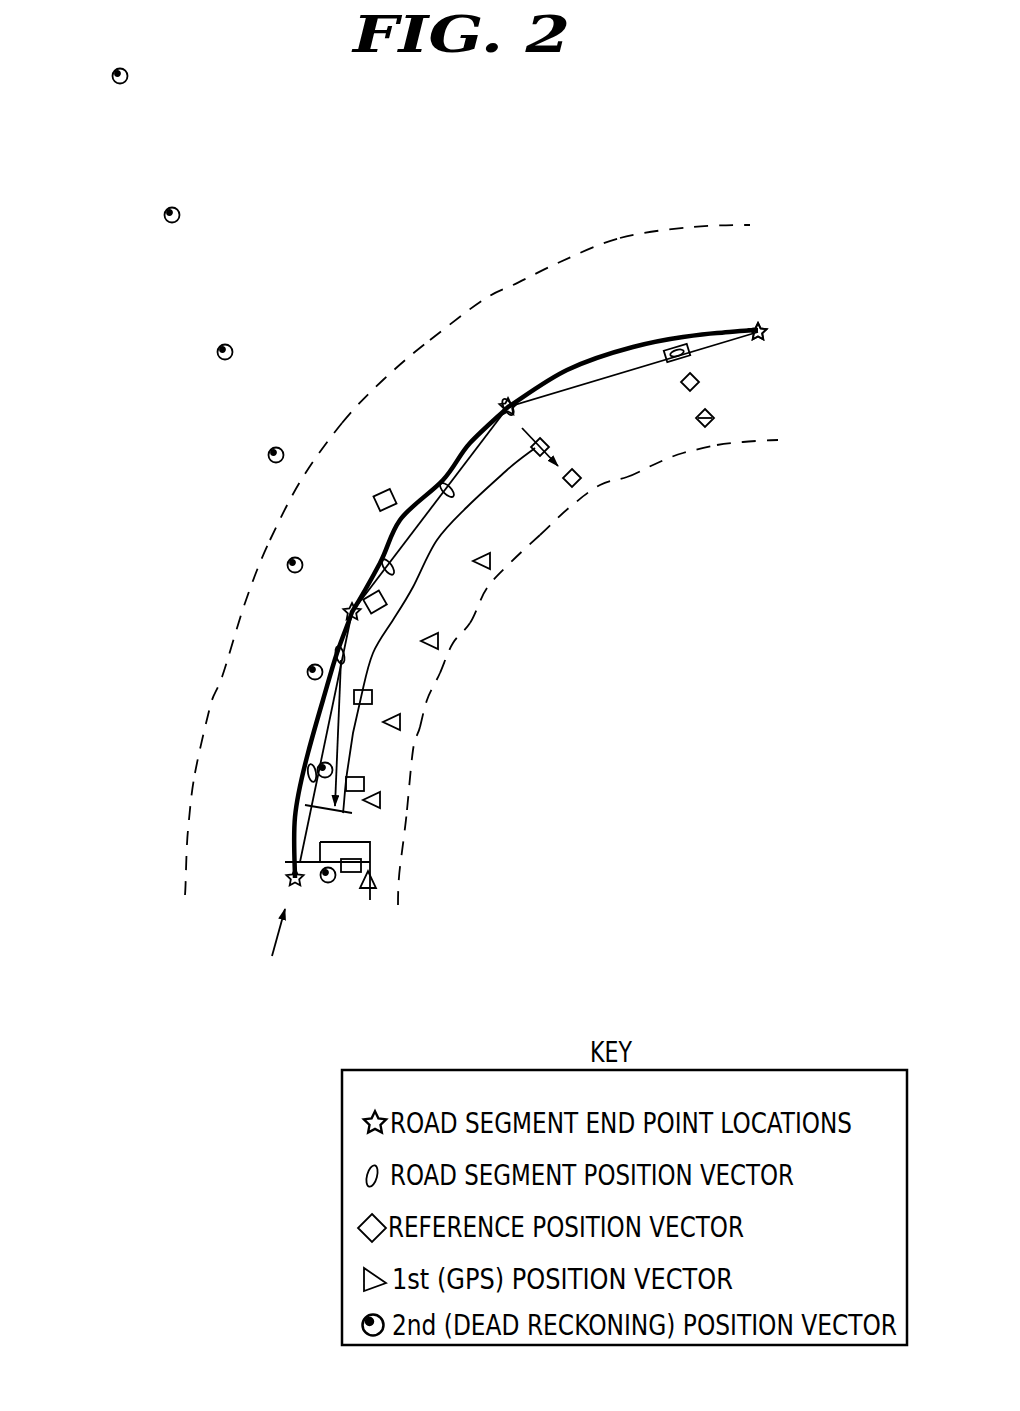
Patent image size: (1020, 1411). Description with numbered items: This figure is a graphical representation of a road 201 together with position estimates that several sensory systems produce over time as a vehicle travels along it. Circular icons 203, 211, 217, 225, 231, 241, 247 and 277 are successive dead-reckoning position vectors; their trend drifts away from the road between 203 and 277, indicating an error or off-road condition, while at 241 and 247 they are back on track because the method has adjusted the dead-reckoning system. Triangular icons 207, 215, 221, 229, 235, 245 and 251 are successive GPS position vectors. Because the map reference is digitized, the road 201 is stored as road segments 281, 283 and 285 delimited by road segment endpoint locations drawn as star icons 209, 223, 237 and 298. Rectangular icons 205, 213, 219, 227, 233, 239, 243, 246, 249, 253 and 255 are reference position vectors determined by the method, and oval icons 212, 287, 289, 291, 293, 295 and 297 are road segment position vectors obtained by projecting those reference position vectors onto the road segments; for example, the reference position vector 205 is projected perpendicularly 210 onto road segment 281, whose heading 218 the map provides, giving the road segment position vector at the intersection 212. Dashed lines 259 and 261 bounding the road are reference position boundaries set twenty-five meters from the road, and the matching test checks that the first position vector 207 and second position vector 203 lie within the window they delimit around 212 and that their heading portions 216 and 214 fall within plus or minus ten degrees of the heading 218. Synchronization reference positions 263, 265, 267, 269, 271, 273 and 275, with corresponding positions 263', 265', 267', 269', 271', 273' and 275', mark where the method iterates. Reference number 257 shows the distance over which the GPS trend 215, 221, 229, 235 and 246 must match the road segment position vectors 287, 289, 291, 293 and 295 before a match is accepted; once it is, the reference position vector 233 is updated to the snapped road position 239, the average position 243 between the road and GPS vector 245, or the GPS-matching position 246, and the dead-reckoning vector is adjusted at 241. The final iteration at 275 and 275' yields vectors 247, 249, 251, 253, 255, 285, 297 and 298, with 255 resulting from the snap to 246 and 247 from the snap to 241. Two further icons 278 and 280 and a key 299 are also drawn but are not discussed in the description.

The road 201 is at (750, 332).
The dead-reckoning position vector 203 is at (328, 884).
The reference position vector 205 is at (352, 873).
The GPS position vector 207 is at (372, 889).
The road segment endpoint location 209 is at (288, 885).
The perpendicular projection 210 is at (333, 872).
The dead-reckoning position vector 211 is at (338, 733).
The road segment position vector 212 is at (288, 876).
The reference position vector 213 is at (355, 776).
The heading portion of second position vector 214 is at (305, 862).
The GPS position vector 215 is at (374, 792).
The heading portion of first position vector 216 is at (340, 836).
The dead-reckoning position vector 217 is at (308, 672).
The heading 218 is at (272, 948).
The reference position vector 219 is at (368, 689).
The GPS position vector 221 is at (395, 714).
The road segment endpoint location 223 is at (347, 610).
The dead-reckoning position vector 225 is at (303, 564).
The reference position vector 227 is at (385, 596).
The GPS position vector 229 is at (433, 632).
The dead-reckoning position vector 231 is at (276, 447).
The reference position vector 233 is at (384, 490).
The GPS position vector 235 is at (481, 552).
The road segment endpoint location 237 is at (505, 400).
The reference position vector 239 is at (500, 405).
The dead-reckoning position vector 241 is at (544, 439).
The average position vector 243 is at (552, 447).
The GPS position vector 245 is at (561, 479).
The snap-to position vector 246 is at (585, 479).
The dead-reckoning position vector 247 is at (678, 382).
The reference position vector 249 is at (688, 392).
The GPS position vector 251 is at (700, 426).
The reference position vector 253 is at (675, 343).
The reference position vector 255 is at (717, 418).
The match qualification distance 257 is at (500, 470).
The reference position boundary 259 is at (750, 225).
The reference position boundary 261 is at (778, 440).
The synchronization reference position 263 is at (454, 857).
The synchronization reference position 265 is at (461, 776).
The synchronization reference position 267 is at (479, 721).
The synchronization reference position 269 is at (503, 662).
The synchronization reference position 271 is at (540, 587).
The synchronization reference position 273 is at (600, 531).
The synchronization reference position 275 is at (696, 492).
The synchronization reference position 263' is at (131, 834).
The synchronization reference position 265' is at (152, 725).
The synchronization reference position 267' is at (197, 608).
The synchronization reference position 269' is at (262, 481).
The synchronization reference position 271' is at (344, 364).
The synchronization reference position 273' is at (461, 267).
The synchronization reference position 275' is at (582, 202).
The dead-reckoning position vector 277 is at (226, 344).
The dead reckoning position vector 278 is at (172, 207).
The dead reckoning position vector 280 is at (120, 68).
The road segment 281 is at (320, 723).
The road segment 283 is at (436, 505).
The road segment 285 is at (643, 368).
The road segment position vector 287 is at (305, 770).
The road segment position vector 289 is at (333, 655).
The road segment position vector 291 is at (384, 559).
The road segment position vector 293 is at (438, 490).
The road segment position vector 295 is at (512, 402).
The road segment position vector 297 is at (692, 360).
The road segment endpoint location 298 is at (768, 328).
The key 299 is at (342, 1335).